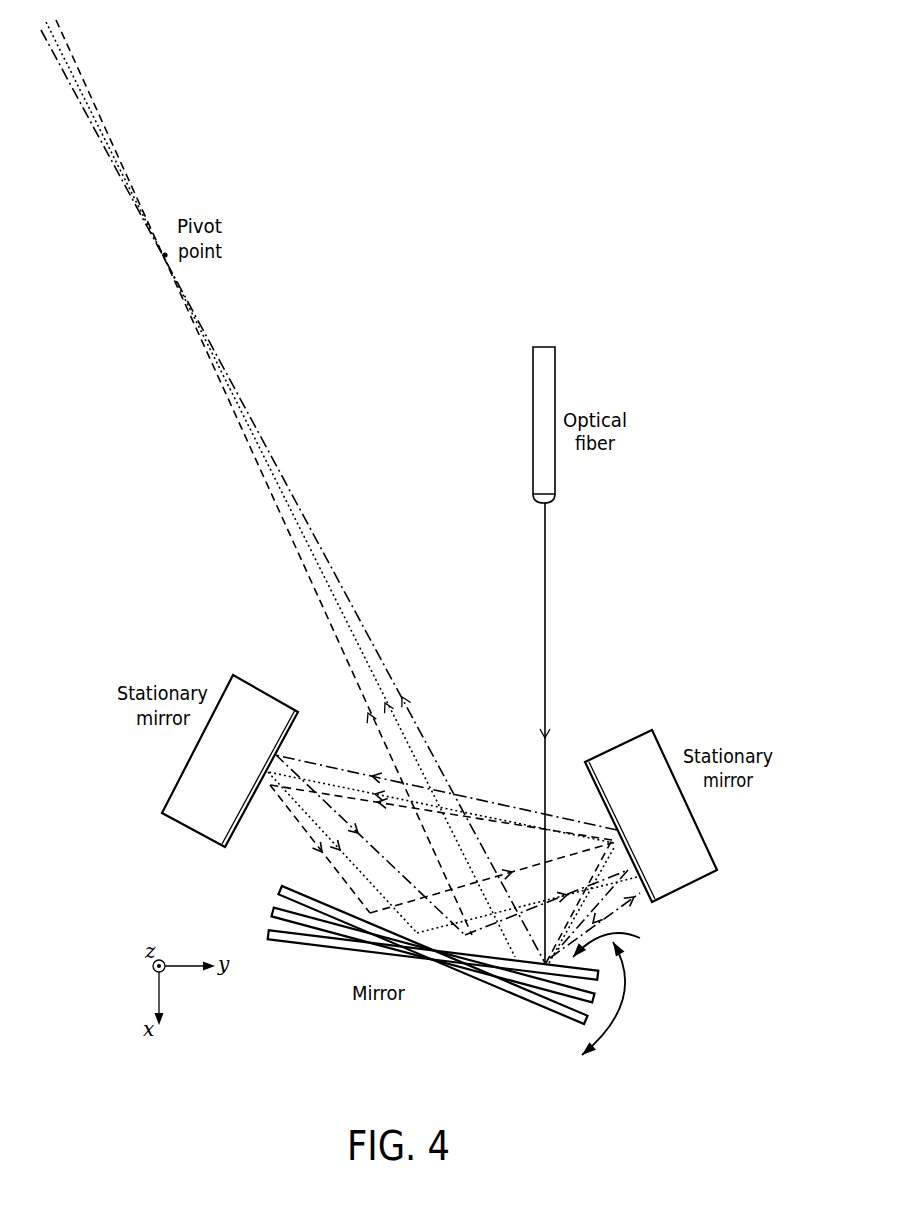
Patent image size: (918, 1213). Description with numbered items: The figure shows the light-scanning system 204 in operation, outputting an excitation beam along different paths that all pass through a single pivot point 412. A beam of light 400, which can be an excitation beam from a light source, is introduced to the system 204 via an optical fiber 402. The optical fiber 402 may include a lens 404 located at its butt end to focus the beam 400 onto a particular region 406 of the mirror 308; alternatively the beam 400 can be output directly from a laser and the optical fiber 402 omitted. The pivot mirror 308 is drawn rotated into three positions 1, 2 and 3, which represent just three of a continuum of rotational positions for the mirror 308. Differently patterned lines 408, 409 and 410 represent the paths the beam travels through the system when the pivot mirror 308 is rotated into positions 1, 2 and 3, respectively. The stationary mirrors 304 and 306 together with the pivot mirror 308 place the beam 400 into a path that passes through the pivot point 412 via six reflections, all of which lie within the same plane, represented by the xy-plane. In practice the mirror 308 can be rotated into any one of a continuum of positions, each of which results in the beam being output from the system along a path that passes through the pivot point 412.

The pivot point 412 is at (163, 255).
The beam path 410 is at (294, 543).
The beam path 408 is at (320, 568).
The beam path 409 is at (354, 608).
The optical fiber 402 is at (556, 366).
The lens 404 is at (556, 503).
The beam of light 400 is at (546, 608).
The light-scanning system 204 is at (688, 655).
The stationary mirror 304 is at (197, 823).
The stationary mirror 306 is at (690, 878).
The pivot mirror 308 is at (419, 942).
The region of the mirror 406 is at (627, 991).
The position 1 is at (273, 920).
The position 2 is at (278, 898).
The position 3 is at (282, 887).